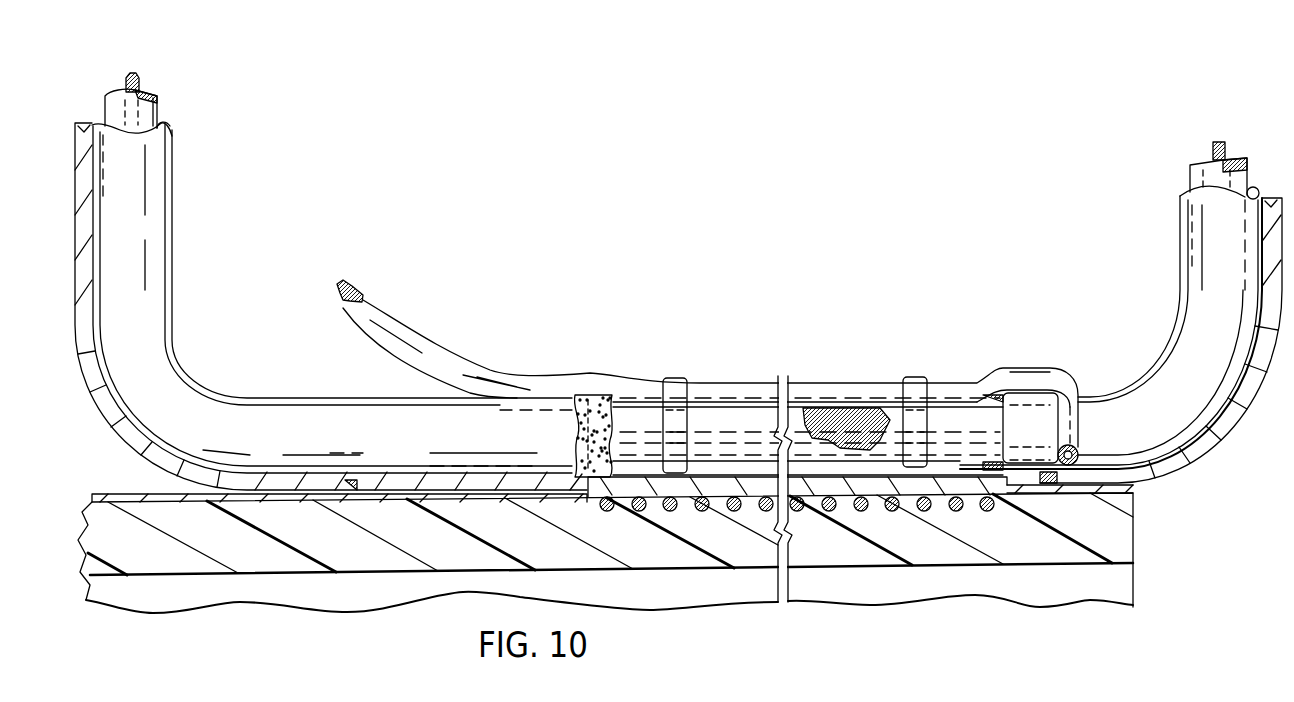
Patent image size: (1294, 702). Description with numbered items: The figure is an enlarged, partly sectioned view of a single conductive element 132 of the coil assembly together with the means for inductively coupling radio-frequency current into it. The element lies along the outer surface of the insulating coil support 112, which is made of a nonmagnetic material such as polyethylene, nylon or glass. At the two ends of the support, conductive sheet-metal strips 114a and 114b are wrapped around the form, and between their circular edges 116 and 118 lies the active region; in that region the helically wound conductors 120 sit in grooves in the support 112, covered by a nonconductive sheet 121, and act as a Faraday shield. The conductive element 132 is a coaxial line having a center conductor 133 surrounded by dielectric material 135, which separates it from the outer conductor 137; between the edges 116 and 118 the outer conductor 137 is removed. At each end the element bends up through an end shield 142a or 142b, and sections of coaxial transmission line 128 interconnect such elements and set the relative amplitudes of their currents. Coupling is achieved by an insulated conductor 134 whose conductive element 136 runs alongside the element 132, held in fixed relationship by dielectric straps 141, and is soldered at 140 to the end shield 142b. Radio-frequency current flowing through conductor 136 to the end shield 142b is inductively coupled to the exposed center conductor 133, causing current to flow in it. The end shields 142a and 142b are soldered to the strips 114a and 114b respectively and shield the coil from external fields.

The coil support 112 is at (1122, 540).
The first conductive strip 114a is at (138, 493).
The second conductive strip 114b is at (1127, 487).
The circular edge of first conductive strip 116 is at (593, 480).
The circular edge of second conductive strip 118 is at (1009, 512).
The conductors 120 is at (733, 512).
The nonconductive sheet material 121 is at (913, 487).
The coaxial transmission line section 128 is at (170, 174).
The conductive element 132 is at (747, 413).
The center conductor 133 is at (140, 80).
The insulated conductor 134 is at (520, 377).
The dielectric material 135 is at (158, 108).
The conductive element of insulated conductor 136 is at (357, 287).
The outer conductor 137 is at (166, 138).
The solder connection 140 is at (1083, 455).
The straps 141 is at (676, 378).
The end shield 142a is at (105, 395).
The end shield 142b is at (1225, 427).